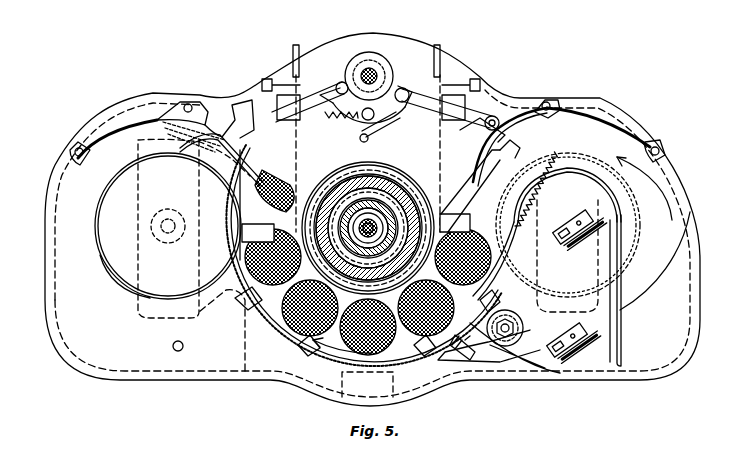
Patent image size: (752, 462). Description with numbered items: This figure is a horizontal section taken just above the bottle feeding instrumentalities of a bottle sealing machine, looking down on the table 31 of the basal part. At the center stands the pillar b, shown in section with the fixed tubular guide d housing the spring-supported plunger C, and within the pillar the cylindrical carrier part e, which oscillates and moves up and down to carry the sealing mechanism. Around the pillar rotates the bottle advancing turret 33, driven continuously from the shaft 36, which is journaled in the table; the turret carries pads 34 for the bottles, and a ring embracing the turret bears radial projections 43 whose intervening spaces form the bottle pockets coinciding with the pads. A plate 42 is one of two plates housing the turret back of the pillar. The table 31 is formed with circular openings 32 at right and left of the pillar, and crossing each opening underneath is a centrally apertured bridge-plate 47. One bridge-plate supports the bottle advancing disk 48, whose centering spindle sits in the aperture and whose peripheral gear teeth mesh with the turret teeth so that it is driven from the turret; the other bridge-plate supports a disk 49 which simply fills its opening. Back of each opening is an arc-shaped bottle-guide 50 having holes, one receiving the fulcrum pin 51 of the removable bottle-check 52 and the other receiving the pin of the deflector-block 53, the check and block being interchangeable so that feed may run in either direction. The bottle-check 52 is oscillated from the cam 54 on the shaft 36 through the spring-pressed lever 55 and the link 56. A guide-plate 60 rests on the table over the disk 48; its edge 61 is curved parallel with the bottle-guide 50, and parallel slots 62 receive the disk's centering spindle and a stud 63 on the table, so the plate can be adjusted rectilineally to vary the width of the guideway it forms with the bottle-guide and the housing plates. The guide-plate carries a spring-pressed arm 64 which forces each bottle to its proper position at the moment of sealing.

The table 31 is at (196, 350).
The circular openings 32 is at (105, 258).
The bottle advancing turret 33 is at (276, 322).
The pads 34 is at (367, 263).
The shaft 36 is at (369, 64).
The plate 42 is at (452, 222).
The radial projections 43 is at (268, 234).
The bridge-plate 47 is at (140, 242).
The bottle advancing disk 48 is at (638, 296).
The disk 49 is at (122, 281).
The arc-shaped bottle-guide 50 is at (142, 118).
The fulcrum pin 51 is at (196, 104).
The bottle-check 52 is at (513, 108).
The deflector-block 53 is at (224, 132).
The cam 54 is at (392, 70).
The spring-pressed lever 55 is at (372, 127).
The link 56 is at (478, 100).
The guide-plate 60 is at (610, 338).
The curved edge 61 is at (520, 196).
The parallel slots 62 is at (572, 242).
The stud 63 is at (520, 332).
The spring-pressed arm 64 is at (440, 356).
The plunger C is at (357, 226).
The pillar b is at (412, 205).
The fixed tubular guide d is at (360, 188).
The cylindrical carrier part e is at (386, 190).